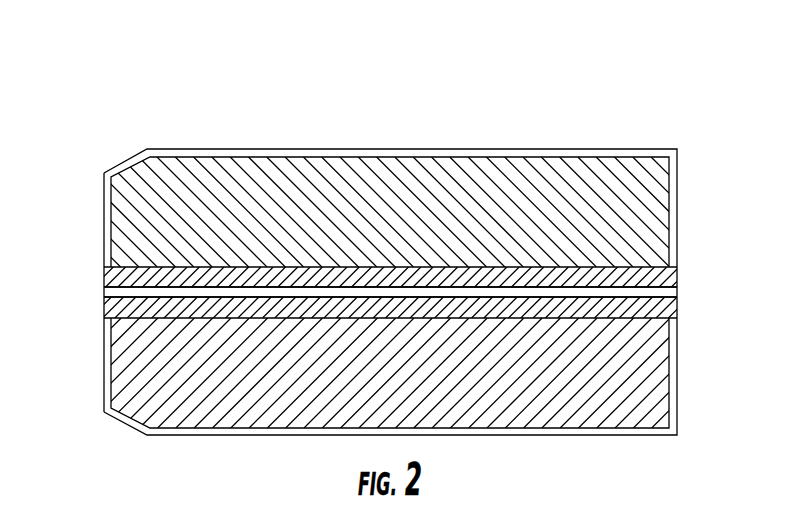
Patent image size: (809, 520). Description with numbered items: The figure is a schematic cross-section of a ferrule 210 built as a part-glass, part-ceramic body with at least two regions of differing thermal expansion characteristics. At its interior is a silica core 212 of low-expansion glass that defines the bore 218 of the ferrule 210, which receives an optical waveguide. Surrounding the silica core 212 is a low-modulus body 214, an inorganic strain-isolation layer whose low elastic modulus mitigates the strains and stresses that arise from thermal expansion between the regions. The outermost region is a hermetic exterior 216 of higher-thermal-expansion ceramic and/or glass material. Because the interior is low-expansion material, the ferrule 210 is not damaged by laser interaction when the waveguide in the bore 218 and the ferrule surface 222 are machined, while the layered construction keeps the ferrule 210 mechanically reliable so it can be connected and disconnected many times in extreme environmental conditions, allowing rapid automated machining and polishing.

The ferrule 210 is at (165, 97).
The silica core 212 is at (670, 278).
The low-modulus body 214 is at (412, 172).
The hermetic exterior 216 is at (673, 186).
The bore 218 is at (93, 293).
The ferrule surface 222 is at (90, 212).